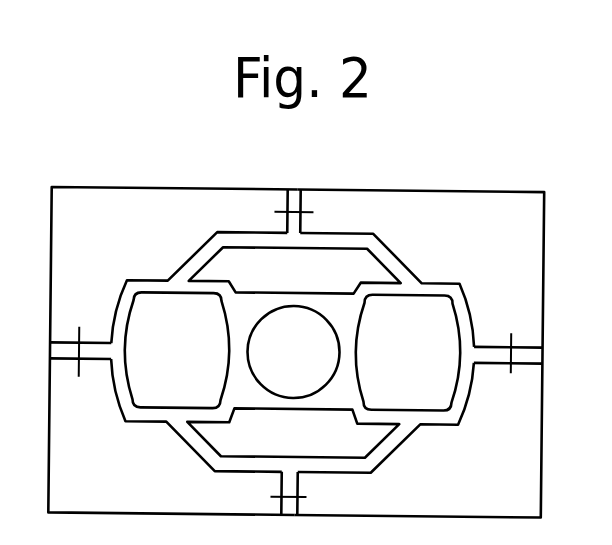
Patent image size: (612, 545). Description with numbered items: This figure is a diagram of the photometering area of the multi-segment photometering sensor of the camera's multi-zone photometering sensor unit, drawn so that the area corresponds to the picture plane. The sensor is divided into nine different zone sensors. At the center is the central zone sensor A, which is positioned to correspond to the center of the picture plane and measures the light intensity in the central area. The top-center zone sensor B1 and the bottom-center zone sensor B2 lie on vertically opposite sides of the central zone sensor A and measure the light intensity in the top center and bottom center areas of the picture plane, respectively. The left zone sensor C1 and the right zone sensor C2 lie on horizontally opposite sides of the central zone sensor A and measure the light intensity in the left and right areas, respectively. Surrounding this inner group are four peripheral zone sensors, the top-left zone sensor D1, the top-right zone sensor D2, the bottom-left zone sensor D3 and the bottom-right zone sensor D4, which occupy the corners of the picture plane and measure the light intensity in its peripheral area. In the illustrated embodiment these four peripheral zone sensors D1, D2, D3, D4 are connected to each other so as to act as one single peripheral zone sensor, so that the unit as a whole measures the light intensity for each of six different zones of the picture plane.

The central zone sensor A is at (293, 351).
The top-center zone sensor B1 is at (295, 270).
The bottom-center zone sensor B2 is at (293, 433).
The left zone sensor C1 is at (176, 350).
The right zone sensor C2 is at (407, 353).
The top-left zone sensor D1 is at (174, 270).
The top-right zone sensor D2 is at (420, 273).
The bottom-left zone sensor D3 is at (172, 432).
The bottom-right zone sensor D4 is at (418, 435).